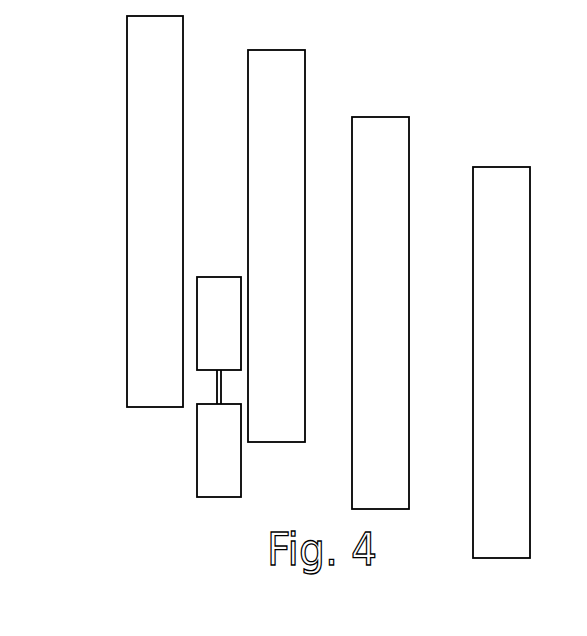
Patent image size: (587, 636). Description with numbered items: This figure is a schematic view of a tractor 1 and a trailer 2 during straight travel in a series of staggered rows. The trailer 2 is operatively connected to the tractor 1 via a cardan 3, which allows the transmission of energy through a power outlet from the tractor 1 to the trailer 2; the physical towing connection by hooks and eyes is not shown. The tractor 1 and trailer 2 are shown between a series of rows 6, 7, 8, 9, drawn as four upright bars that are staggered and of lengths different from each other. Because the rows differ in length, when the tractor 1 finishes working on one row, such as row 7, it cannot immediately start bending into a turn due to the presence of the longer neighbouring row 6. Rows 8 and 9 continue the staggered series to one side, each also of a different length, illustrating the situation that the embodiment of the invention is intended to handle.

The tractor 1 is at (223, 292).
The trailer 2 is at (219, 447).
The cardan 3 is at (216, 397).
The row 6 is at (139, 33).
The row 7 is at (298, 72).
The row 8 is at (367, 248).
The row 9 is at (481, 300).